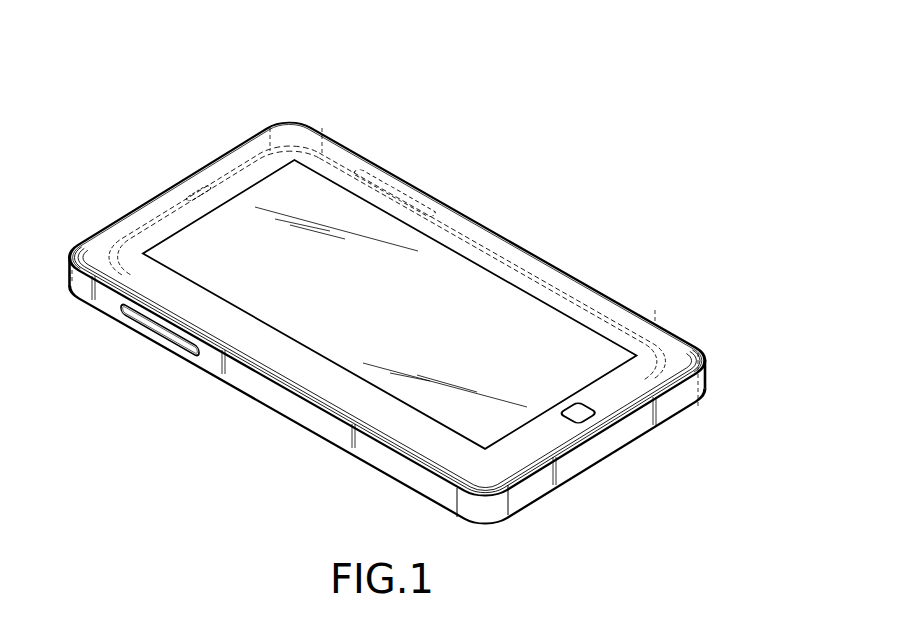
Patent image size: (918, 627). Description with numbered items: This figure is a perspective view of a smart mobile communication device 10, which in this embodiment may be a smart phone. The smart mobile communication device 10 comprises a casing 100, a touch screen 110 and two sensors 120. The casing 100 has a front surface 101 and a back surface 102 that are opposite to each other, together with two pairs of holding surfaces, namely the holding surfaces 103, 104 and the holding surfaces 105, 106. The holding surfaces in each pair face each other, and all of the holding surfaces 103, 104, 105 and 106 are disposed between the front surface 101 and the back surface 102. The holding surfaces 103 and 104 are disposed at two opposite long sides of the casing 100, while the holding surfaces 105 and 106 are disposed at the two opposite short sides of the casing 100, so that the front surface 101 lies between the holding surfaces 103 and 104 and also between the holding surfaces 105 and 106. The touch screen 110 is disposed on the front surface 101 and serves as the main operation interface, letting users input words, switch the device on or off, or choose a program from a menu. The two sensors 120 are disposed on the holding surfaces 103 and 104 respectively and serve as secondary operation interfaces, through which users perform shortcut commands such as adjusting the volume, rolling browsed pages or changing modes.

The smart mobile communication device 10 is at (614, 214).
The casing 100 is at (708, 347).
The front surface 101 is at (290, 358).
The back surface 102 is at (707, 398).
The holding surface 103 is at (653, 318).
The holding surface 104 is at (290, 410).
The holding surface 105 is at (580, 460).
The holding surface 106 is at (158, 210).
The touch screen 110 is at (323, 192).
The sensor 120 is at (397, 180).